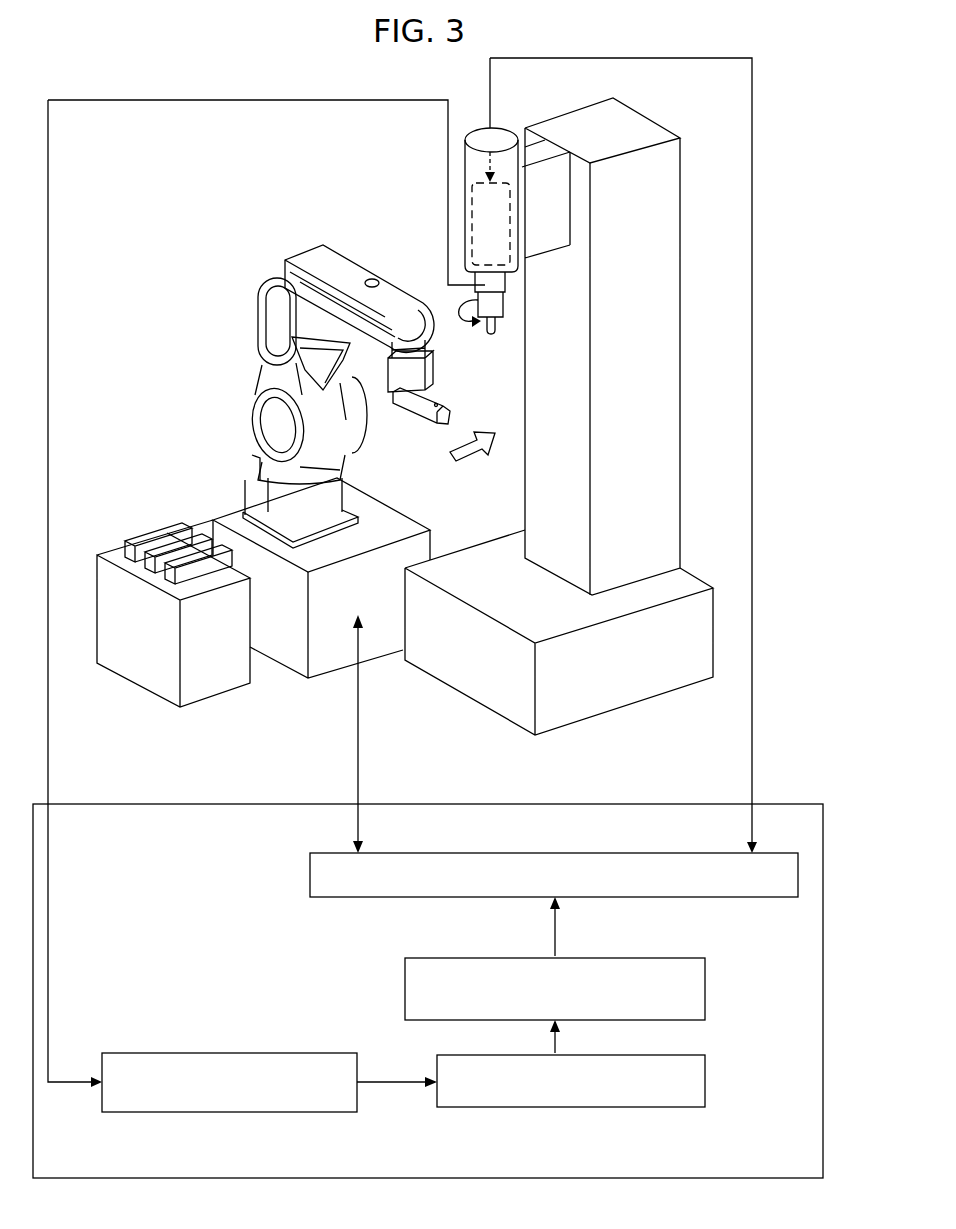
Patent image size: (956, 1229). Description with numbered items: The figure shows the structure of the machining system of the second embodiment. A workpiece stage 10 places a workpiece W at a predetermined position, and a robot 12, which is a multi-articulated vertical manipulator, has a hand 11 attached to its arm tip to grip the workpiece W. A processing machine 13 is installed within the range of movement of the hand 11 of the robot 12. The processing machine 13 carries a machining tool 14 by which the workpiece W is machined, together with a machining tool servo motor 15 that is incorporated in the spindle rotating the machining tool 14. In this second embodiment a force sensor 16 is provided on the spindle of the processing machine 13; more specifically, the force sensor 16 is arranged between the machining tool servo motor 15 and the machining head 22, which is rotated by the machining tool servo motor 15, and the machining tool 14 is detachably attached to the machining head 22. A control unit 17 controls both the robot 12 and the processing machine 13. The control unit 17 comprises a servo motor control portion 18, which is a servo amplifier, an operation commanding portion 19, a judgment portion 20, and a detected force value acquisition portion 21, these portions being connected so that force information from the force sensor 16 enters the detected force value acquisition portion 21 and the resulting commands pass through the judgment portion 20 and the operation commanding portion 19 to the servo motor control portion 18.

The workpiece stage 10 is at (207, 652).
The hand 11 is at (432, 378).
The robot 12 is at (268, 284).
The processing machine 13 is at (690, 515).
The machining tool 14 is at (507, 331).
The machining tool servo motor 15 is at (490, 232).
The force sensor 16 is at (505, 283).
The control unit 17 is at (212, 804).
The servo motor control portion 18 is at (310, 877).
The operation commanding portion 19 is at (405, 995).
The judgment portion 20 is at (437, 1068).
The detected force value acquisition portion 21 is at (228, 1053).
The machining head 22 is at (503, 303).
The workpiece W is at (185, 525).